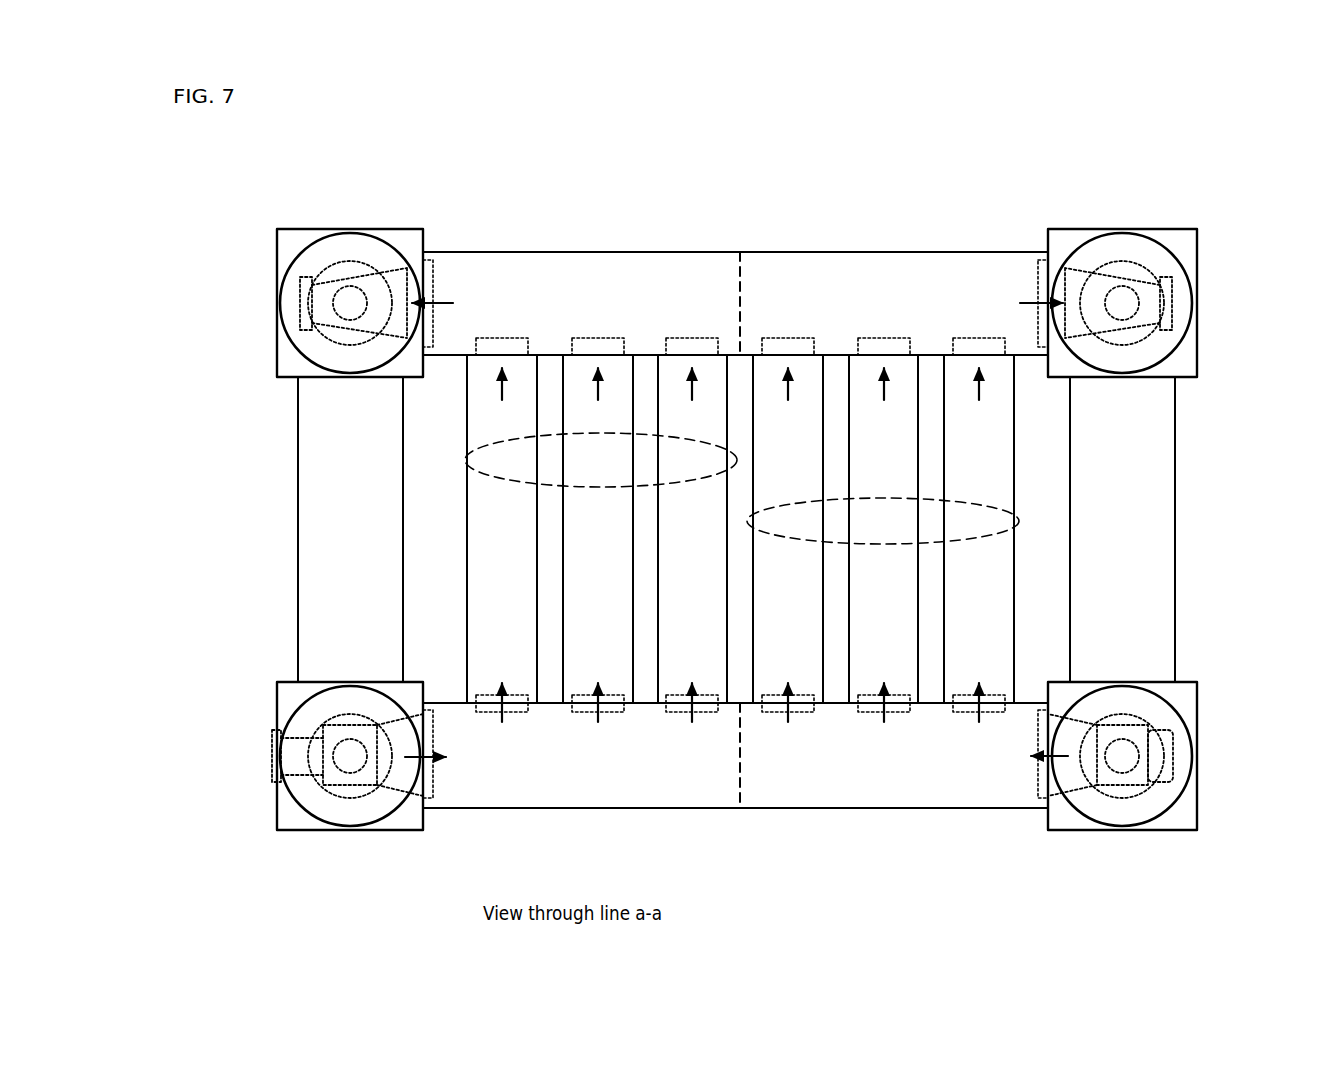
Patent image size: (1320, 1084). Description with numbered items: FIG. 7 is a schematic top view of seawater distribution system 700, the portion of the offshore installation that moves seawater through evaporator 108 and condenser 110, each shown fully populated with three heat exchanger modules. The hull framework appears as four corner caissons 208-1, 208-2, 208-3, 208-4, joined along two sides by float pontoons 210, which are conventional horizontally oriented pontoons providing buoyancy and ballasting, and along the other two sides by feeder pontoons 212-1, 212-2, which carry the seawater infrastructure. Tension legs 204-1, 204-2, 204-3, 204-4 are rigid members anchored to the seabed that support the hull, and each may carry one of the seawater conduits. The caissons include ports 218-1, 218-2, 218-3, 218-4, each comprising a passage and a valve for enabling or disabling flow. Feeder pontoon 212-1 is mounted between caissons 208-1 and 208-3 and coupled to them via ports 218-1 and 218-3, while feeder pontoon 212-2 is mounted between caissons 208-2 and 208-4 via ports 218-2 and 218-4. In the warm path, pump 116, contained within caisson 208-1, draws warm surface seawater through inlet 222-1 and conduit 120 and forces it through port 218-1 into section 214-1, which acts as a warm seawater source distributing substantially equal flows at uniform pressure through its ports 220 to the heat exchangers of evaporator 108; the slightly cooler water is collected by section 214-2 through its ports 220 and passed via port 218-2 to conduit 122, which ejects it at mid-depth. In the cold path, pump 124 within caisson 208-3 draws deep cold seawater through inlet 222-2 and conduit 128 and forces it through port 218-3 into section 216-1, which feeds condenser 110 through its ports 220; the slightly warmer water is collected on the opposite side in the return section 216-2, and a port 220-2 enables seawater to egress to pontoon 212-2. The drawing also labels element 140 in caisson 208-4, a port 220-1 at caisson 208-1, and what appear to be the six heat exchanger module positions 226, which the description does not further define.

The seawater distribution system 700 is at (326, 127).
The caisson 208-1 is at (331, 779).
The caisson 208-2 is at (349, 273).
The caisson 208-3 is at (1122, 785).
The caisson 208-4 is at (1123, 274).
The tension leg 204-1 is at (327, 715).
The tension leg 204-2 is at (320, 340).
The tension leg 204-3 is at (1150, 720).
The tension leg 204-4 is at (1150, 338).
The conduit 122 is at (348, 297).
The fan hub 140 is at (1123, 297).
The pump 116 is at (350, 777).
The conduit 128 is at (1123, 765).
The pump 124 is at (1143, 782).
The conduit 120 is at (293, 757).
The port 218-1 is at (407, 763).
The port 218-2 is at (405, 292).
The port 218-3 is at (1067, 765).
The port 218-4 is at (1065, 292).
The inlet 222-1 is at (299, 297).
The inlet 222-2 is at (1173, 300).
The fan inlet 220-1 is at (268, 770).
The port 220-2 is at (1173, 760).
The ports 220 is at (670, 341).
The server slots 226 is at (518, 531).
The float pontoons 210 is at (371, 504).
The feeder pontoon 212-1 is at (735, 809).
The feeder pontoon 212-2 is at (735, 249).
The section 214-1 is at (676, 810).
The section 214-2 is at (676, 252).
The section 216-1 is at (876, 810).
The duct section 216-2 is at (876, 252).
The evaporator 108 is at (468, 450).
The condenser 110 is at (1020, 522).